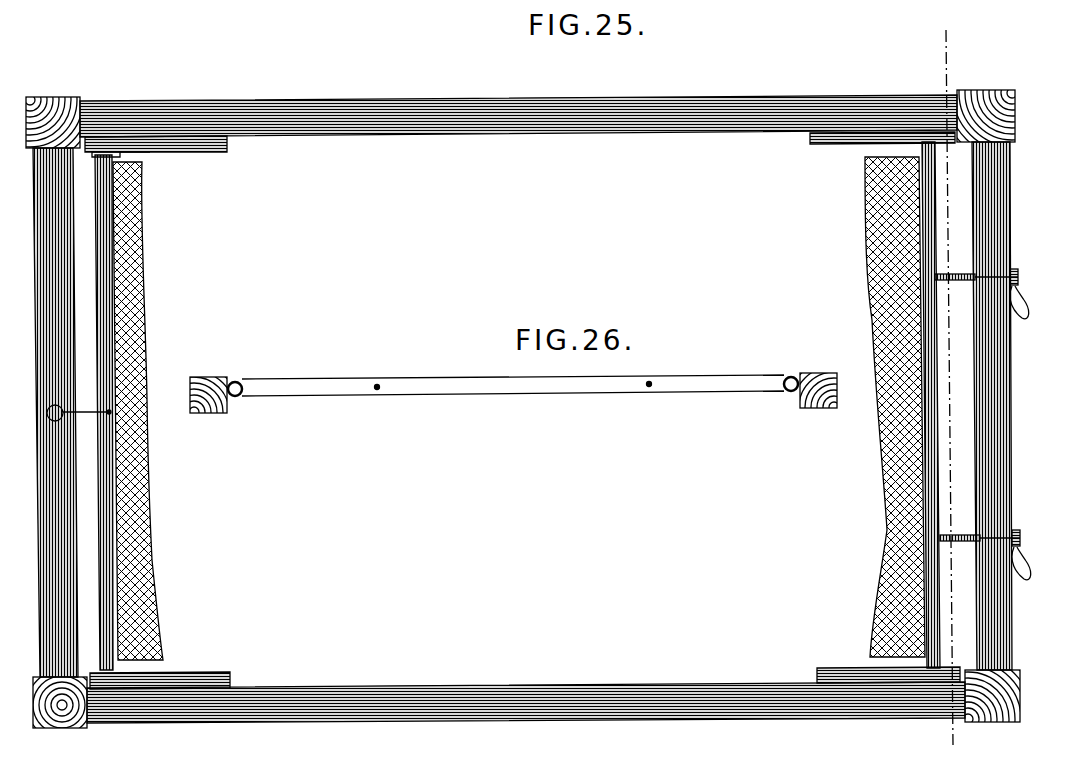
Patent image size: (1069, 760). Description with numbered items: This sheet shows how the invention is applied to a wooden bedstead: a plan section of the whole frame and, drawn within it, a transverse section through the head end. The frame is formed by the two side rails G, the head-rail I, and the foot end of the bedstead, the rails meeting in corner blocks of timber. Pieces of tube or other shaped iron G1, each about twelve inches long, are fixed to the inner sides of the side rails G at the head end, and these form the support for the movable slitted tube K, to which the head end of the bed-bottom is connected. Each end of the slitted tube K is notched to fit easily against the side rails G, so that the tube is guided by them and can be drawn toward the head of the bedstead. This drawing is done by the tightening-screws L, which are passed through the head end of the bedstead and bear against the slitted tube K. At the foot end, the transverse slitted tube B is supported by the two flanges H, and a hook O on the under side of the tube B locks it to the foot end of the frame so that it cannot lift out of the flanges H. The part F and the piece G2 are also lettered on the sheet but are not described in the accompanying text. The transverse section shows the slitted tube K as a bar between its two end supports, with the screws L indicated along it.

In FIG. 25, the side rail G is at (522, 96).
In FIG. 25, the piece of tube or shaped iron G1 is at (205, 150).
In FIG. 26, the piece of tube or shaped iron G1 is at (238, 382).
In FIG. 25, the rail strip G2 is at (220, 675).
In FIG. 26, the rail strip G2 is at (834, 407).
In FIG. 25, the frame post F is at (44, 462).
In FIG. 25, the head-rail I is at (996, 406).
In FIG. 25, the transverse slitted tube B is at (96, 412).
In FIG. 25, the flange-bearer H is at (141, 158).
In FIG. 25, the slitted tube K is at (928, 218).
In FIG. 26, the slitted tube K is at (492, 384).
In FIG. 25, the tightening-screw L is at (1018, 277).
In FIG. 26, the tightening-screw L is at (377, 389).
In FIG. 25, the hook O is at (95, 414).